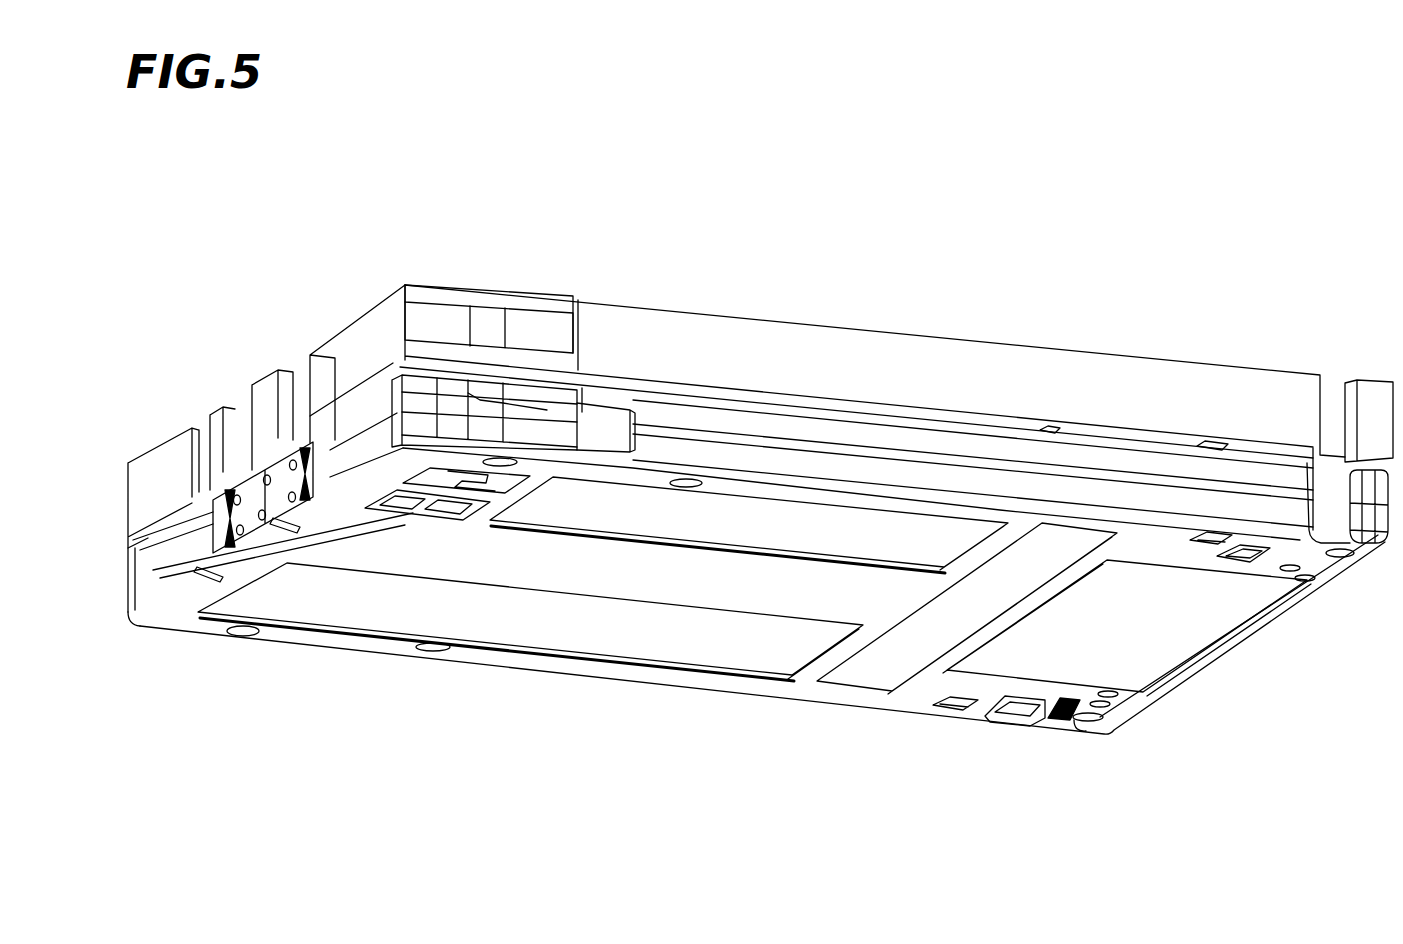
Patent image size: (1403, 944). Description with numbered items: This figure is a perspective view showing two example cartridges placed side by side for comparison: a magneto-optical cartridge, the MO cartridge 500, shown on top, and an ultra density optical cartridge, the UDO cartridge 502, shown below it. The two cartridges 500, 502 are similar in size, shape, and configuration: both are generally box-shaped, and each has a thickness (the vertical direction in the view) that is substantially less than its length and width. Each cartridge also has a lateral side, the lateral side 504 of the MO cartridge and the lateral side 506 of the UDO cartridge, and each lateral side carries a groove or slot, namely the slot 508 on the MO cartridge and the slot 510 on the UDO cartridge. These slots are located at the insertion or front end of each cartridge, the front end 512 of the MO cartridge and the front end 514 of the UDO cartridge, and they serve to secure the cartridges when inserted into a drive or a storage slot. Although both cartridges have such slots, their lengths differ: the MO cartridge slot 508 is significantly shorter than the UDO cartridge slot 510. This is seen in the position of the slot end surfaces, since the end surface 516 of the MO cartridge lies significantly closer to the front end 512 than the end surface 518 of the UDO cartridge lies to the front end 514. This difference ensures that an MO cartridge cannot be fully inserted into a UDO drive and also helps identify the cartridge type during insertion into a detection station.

The MO cartridge 500 is at (968, 316).
The UDO cartridge 502 is at (918, 750).
The lateral side 504 is at (703, 324).
The lateral side 506 is at (787, 430).
The slot 508 is at (443, 323).
The slot 510 is at (602, 417).
The front end 512 is at (134, 441).
The front end 514 is at (111, 622).
The end surface 516 is at (577, 336).
The end surface 518 is at (613, 418).